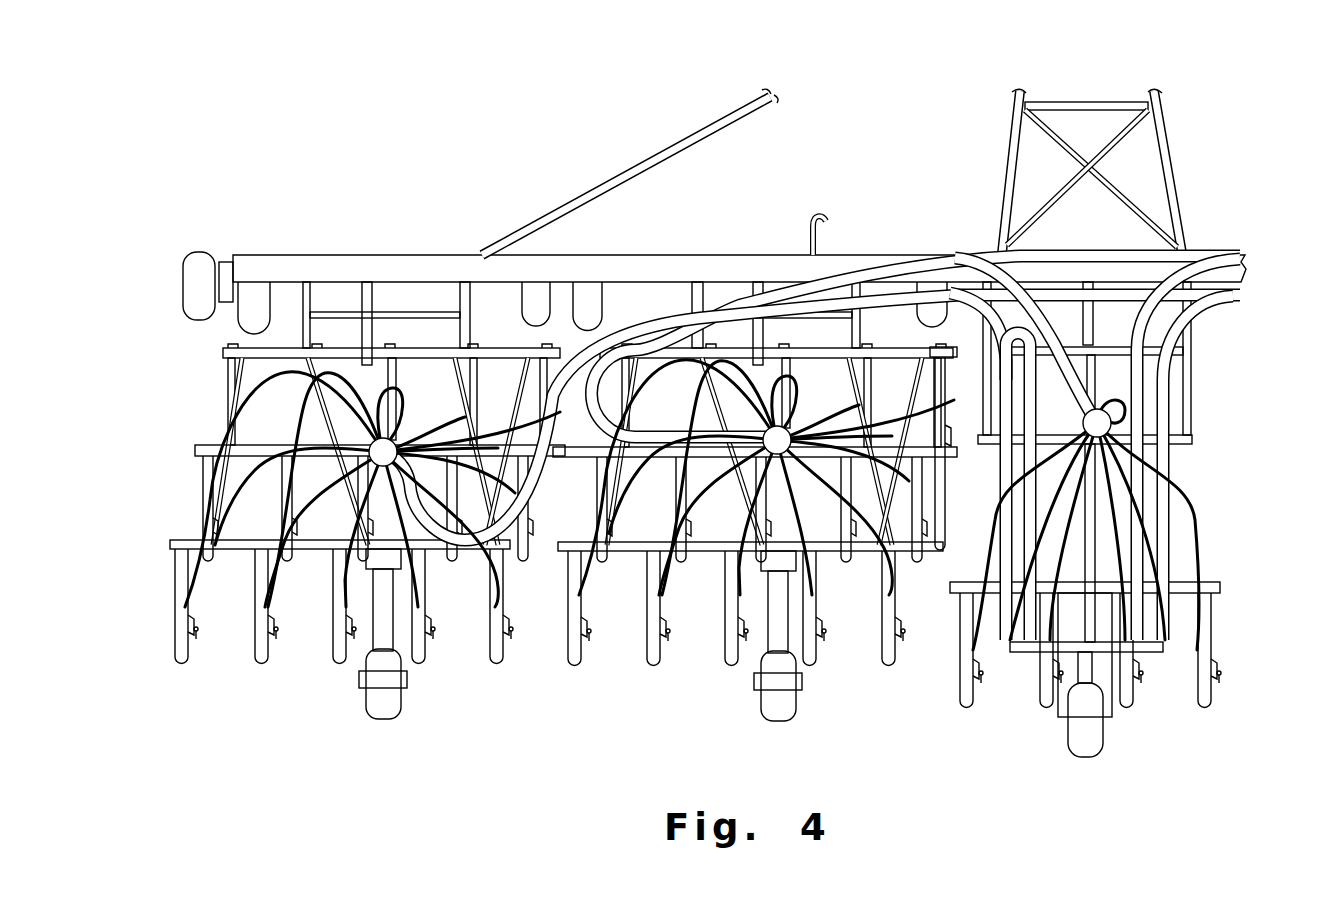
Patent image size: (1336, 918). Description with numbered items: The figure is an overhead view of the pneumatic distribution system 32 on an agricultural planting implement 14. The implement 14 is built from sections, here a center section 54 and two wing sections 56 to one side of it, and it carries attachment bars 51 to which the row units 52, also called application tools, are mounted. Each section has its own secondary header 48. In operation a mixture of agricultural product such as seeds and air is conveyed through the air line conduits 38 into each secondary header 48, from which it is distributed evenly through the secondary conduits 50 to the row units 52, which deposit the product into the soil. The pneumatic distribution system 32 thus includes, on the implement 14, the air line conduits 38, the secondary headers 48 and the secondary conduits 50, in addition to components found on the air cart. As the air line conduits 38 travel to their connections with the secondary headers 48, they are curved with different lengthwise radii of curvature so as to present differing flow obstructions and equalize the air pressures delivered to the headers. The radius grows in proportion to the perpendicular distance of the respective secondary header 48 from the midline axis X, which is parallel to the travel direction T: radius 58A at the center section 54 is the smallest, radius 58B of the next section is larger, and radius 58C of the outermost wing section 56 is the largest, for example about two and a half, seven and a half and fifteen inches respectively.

The agricultural planting implement 14 is at (190, 165).
The pneumatic distribution system 32 is at (1208, 165).
The air line conduits 38 is at (1237, 363).
The secondary header 48 is at (385, 445).
The secondary conduits 50 is at (200, 604).
The attachment bars 51 is at (198, 462).
The row units 52 is at (180, 650).
The center section 54 is at (1106, 92).
The wing section 56 is at (263, 243).
The radius 58A is at (1018, 325).
The radius 58B is at (602, 393).
The radius 58C is at (470, 547).
The travel direction T is at (1270, 520).
The midline axis X is at (1085, 700).